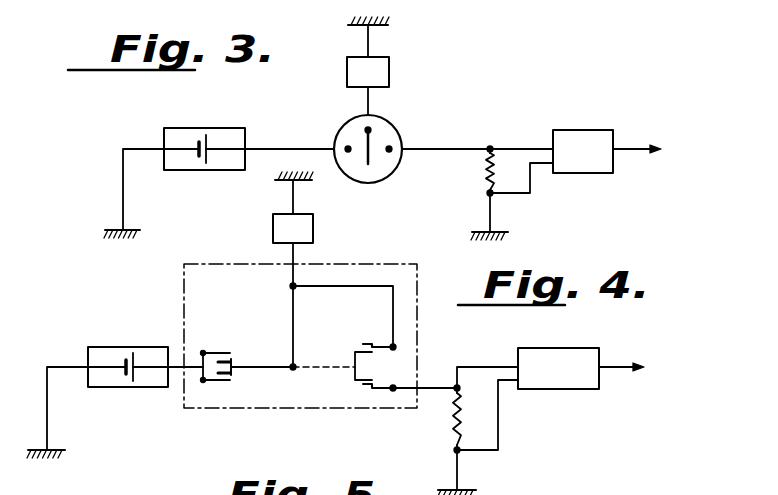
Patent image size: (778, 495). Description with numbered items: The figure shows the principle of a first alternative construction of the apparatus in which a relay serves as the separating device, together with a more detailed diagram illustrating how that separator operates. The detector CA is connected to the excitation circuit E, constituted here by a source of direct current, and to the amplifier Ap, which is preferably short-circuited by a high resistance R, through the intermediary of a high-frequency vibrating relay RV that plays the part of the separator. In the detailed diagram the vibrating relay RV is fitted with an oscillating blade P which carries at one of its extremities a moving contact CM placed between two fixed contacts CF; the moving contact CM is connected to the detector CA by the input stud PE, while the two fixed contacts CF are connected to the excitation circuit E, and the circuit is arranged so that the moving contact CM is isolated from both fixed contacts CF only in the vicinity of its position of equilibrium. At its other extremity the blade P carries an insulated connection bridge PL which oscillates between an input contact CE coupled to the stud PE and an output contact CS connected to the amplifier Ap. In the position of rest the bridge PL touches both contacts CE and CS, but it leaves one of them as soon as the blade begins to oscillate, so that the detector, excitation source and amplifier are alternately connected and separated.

In FIG. 3, the excitation circuit E is at (204, 135).
In FIG. 4, the excitation circuit E is at (128, 352).
In FIG. 3, the detector CA is at (368, 66).
In FIG. 4, the detector CA is at (293, 269).
In FIG. 3, the vibrating relay RV is at (368, 163).
In FIG. 4, the vibrating relay RV is at (300, 352).
In FIG. 3, the high resistance R is at (512, 181).
In FIG. 4, the high resistance R is at (473, 431).
In FIG. 3, the amplifier Ap is at (607, 151).
In FIG. 4, the amplifier Ap is at (581, 368).
In FIG. 4, the input stud PE is at (341, 306).
In FIG. 4, the fixed contacts CF is at (216, 367).
In FIG. 4, the moving contact CM is at (231, 360).
In FIG. 4, the oscillating blade P is at (293, 377).
In FIG. 4, the input contact CE is at (379, 336).
In FIG. 4, the connection bridge PL is at (370, 366).
In FIG. 4, the output contact CS is at (409, 398).